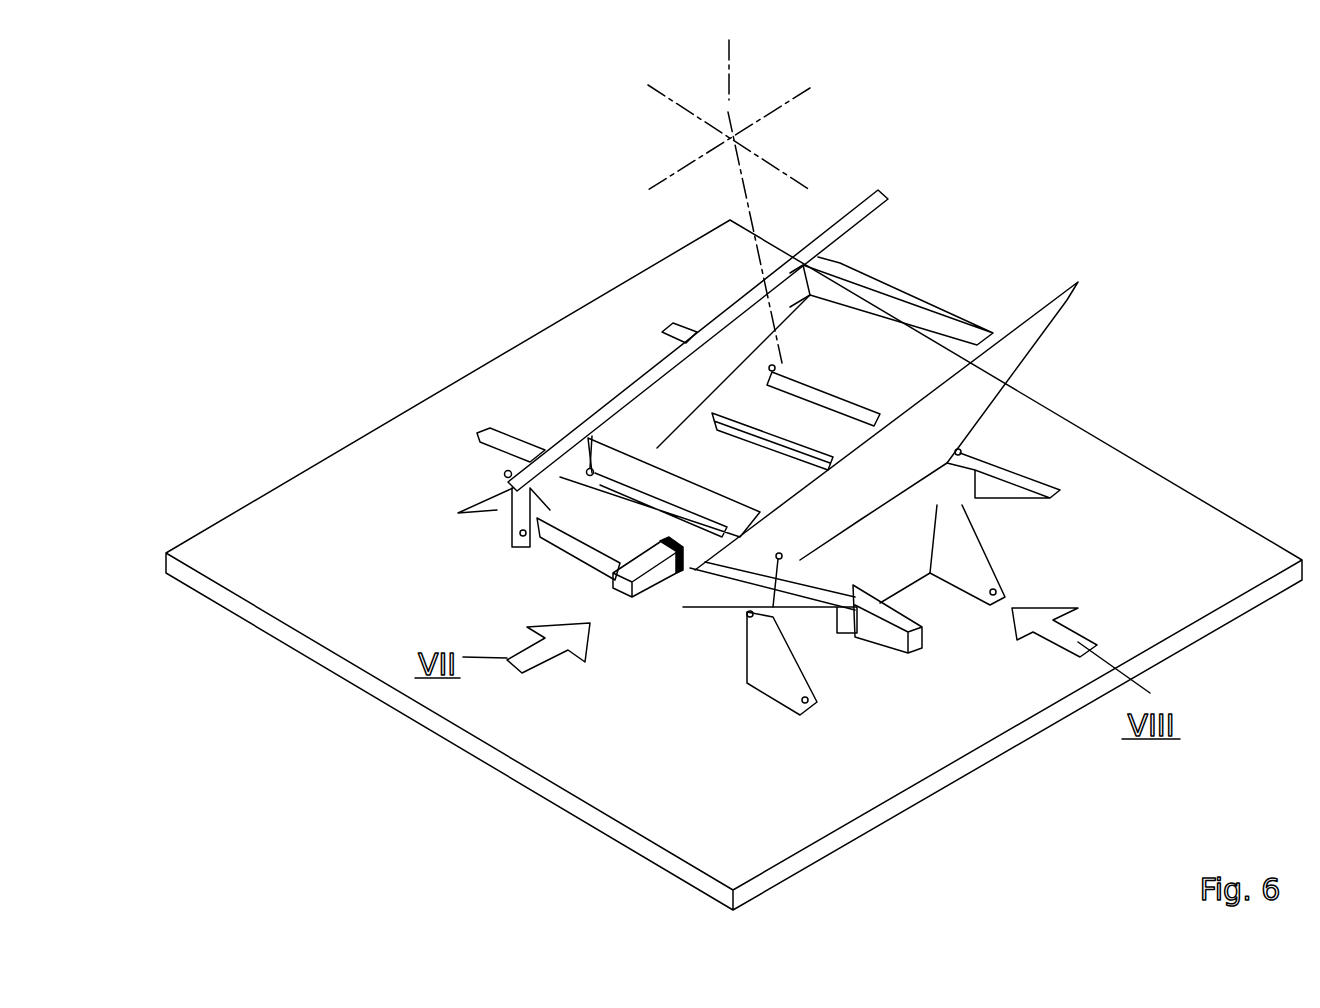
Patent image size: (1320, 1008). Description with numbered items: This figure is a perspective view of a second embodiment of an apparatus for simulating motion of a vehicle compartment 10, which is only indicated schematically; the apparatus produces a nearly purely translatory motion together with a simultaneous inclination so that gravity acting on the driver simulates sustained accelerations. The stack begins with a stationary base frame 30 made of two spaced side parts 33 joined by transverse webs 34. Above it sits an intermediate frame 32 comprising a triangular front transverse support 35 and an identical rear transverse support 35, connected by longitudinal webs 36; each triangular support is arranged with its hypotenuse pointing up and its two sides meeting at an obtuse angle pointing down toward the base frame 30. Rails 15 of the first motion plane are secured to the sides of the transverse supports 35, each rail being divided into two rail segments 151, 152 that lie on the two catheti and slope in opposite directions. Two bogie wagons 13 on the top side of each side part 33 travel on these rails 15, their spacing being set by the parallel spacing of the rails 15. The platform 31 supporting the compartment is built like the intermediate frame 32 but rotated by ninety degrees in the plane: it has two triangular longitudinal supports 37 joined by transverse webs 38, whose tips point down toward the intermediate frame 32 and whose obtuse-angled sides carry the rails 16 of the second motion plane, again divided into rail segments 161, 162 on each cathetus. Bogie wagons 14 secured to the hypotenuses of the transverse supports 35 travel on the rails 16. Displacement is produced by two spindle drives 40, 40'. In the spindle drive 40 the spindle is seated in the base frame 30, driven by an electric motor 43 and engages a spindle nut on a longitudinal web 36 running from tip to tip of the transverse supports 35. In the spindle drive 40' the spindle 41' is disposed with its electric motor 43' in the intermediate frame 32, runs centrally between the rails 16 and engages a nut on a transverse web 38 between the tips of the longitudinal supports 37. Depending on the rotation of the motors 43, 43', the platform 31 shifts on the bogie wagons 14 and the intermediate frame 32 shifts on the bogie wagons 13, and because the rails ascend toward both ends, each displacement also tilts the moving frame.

The vehicle compartment 10 is at (750, 203).
The bogie wagon 13 is at (508, 482).
The bogie wagon 14 is at (790, 362).
The rail 15 is at (458, 513).
The rail 16 is at (850, 255).
The base frame 30 is at (742, 687).
The platform 31 is at (1030, 298).
The intermediate frame 32 is at (1030, 468).
The side part 33 is at (490, 490).
The transverse web 34 is at (745, 565).
The transverse support 35 is at (823, 393).
The longitudinal web 36 is at (935, 508).
The longitudinal support 37 is at (738, 340).
The transverse web 38 is at (936, 322).
The spindle drive 40 is at (887, 667).
The spindle drive 40' is at (575, 572).
The spindle 41' is at (660, 438).
The electric motor 43 is at (939, 674).
The electric motor 43' is at (577, 586).
The rail segment 151 is at (673, 340).
The rail segment 152 is at (1037, 500).
The rail segment 161 is at (555, 480).
The rail segment 162 is at (877, 218).